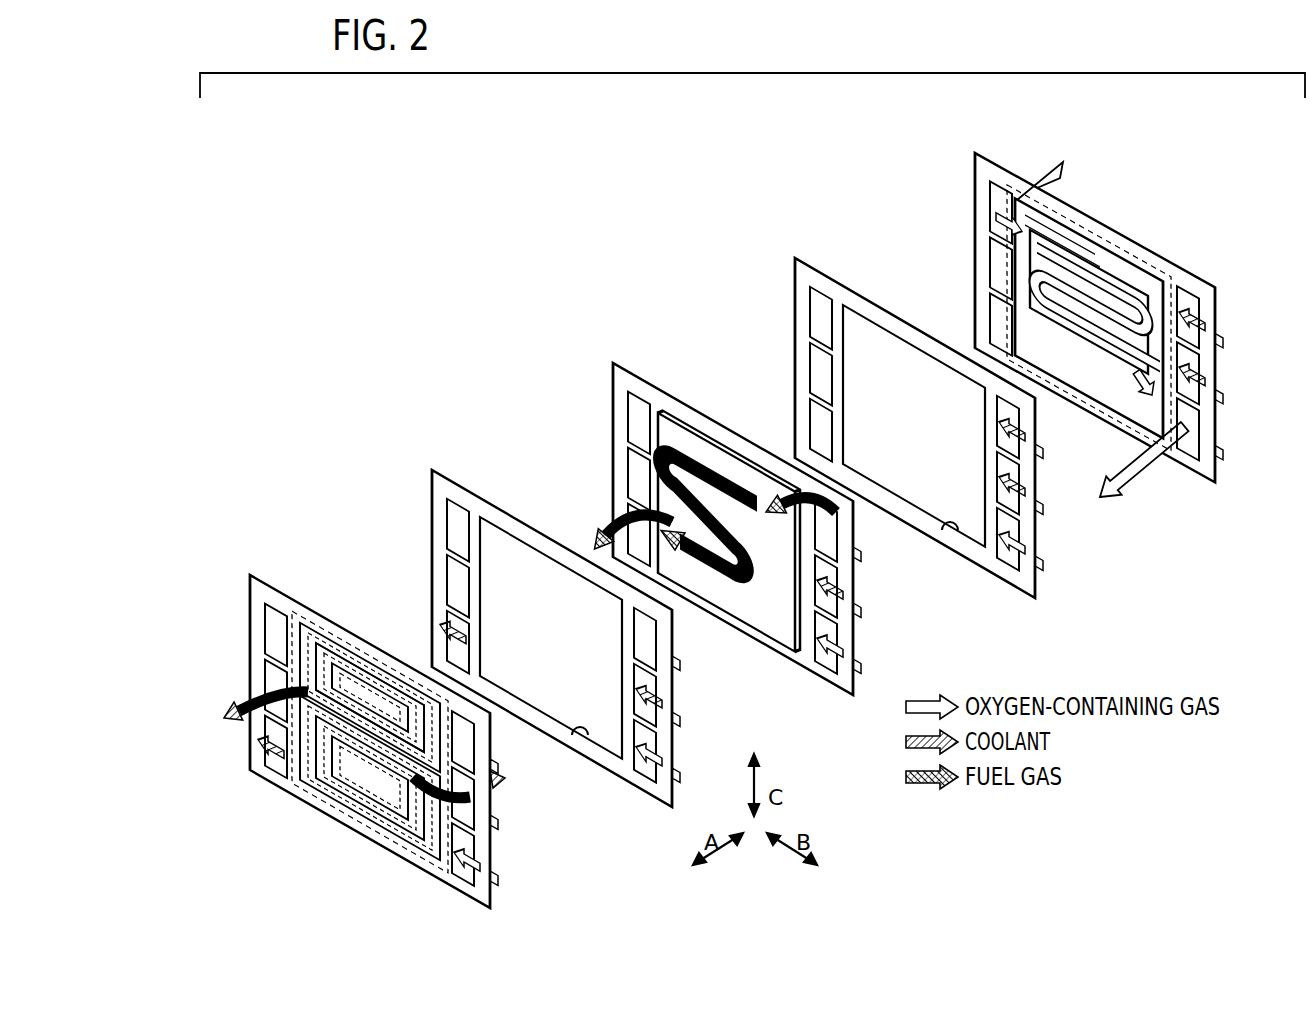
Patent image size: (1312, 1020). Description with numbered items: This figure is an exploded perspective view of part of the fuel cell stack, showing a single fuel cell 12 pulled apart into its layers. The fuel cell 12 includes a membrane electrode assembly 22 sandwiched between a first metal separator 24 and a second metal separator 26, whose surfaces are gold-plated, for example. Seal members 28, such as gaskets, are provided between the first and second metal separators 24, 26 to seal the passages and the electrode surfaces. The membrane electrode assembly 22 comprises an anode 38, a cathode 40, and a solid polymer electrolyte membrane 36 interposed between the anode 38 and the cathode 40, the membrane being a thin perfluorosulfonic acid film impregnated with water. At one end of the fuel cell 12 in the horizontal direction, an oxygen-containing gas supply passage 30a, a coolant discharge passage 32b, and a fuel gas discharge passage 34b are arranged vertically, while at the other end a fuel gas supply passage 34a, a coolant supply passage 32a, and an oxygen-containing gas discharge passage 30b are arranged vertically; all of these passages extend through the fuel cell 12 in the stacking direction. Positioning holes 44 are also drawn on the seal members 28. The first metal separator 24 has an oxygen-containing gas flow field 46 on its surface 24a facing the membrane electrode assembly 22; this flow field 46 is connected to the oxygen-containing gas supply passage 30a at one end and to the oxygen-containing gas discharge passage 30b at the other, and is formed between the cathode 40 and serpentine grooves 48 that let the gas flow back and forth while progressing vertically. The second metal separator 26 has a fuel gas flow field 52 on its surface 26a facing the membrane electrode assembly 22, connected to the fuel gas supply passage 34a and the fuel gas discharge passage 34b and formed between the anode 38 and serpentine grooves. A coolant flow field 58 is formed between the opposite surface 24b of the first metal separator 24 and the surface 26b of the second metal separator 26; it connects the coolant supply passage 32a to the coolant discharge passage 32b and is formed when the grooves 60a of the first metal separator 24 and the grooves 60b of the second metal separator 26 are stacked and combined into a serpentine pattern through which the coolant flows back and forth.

The fuel cell 12 is at (570, 270).
The membrane electrode assembly 22 is at (612, 358).
The first metal separator 24 is at (974, 148).
The surface of the first metal separator 24a is at (1196, 480).
The surface of the first metal separator 24b is at (1092, 420).
The second metal separator 26 is at (249, 571).
The surface of the second metal separator 26a is at (393, 850).
The surface of the second metal separator 26b is at (345, 822).
The seal member 28 is at (431, 464).
The oxygen-containing gas supply passage 30a is at (268, 622).
The oxygen-containing gas discharge passage 30b is at (472, 868).
The coolant supply passage 32a is at (472, 816).
The coolant discharge passage 32b is at (268, 679).
The fuel gas supply passage 34a is at (472, 760).
The fuel gas discharge passage 34b is at (265, 736).
The solid polymer electrolyte membrane 36 is at (822, 674).
The anode 38 is at (732, 602).
The cathode 40 is at (695, 432).
The positioning hole 44 is at (579, 742).
The oxygen-containing gas flow field 46 is at (1062, 222).
The serpentine grooves 48 is at (1108, 262).
The fuel gas flow field 52 is at (370, 680).
The coolant flow field 58 is at (330, 630).
The grooves (flow field) of the first metal separator 60a is at (1176, 272).
The grooves (flow field) of the second metal separator 60b is at (310, 800).